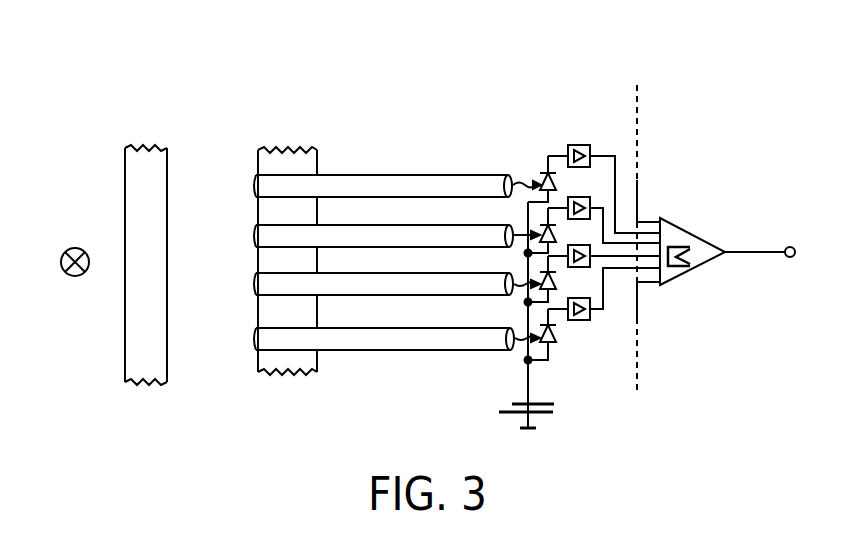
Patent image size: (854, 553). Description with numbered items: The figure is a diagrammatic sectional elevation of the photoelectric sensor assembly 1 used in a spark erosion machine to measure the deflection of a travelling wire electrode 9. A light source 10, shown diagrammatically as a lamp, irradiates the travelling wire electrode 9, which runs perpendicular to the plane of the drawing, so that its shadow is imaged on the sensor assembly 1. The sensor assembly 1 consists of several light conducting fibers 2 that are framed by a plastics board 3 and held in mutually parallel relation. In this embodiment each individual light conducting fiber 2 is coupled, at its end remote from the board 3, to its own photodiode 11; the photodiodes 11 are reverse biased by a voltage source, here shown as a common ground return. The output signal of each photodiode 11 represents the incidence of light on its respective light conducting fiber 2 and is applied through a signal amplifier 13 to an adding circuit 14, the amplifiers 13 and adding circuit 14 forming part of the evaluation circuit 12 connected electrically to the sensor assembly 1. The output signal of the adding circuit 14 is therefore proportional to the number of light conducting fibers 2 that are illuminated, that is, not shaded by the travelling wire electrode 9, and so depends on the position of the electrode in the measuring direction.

The sensor assembly 1 is at (433, 140).
The light conducting fibers 2 is at (278, 184).
The plastics board 3 is at (278, 165).
The travelling wire electrode 9 is at (147, 197).
The light source 10 is at (72, 277).
The photodiode 11 is at (565, 337).
The evaluation circuit 12 is at (706, 78).
The signal amplifiers 13 is at (590, 316).
The adding circuit 14 is at (690, 278).